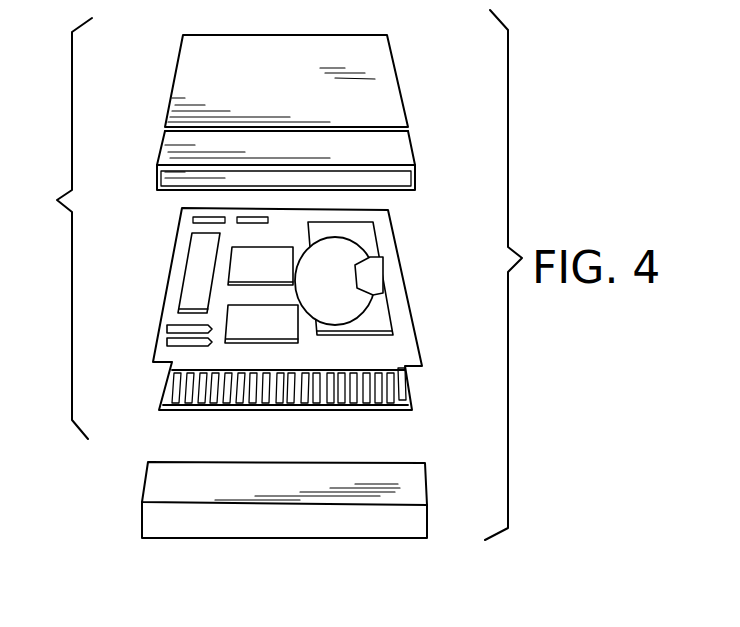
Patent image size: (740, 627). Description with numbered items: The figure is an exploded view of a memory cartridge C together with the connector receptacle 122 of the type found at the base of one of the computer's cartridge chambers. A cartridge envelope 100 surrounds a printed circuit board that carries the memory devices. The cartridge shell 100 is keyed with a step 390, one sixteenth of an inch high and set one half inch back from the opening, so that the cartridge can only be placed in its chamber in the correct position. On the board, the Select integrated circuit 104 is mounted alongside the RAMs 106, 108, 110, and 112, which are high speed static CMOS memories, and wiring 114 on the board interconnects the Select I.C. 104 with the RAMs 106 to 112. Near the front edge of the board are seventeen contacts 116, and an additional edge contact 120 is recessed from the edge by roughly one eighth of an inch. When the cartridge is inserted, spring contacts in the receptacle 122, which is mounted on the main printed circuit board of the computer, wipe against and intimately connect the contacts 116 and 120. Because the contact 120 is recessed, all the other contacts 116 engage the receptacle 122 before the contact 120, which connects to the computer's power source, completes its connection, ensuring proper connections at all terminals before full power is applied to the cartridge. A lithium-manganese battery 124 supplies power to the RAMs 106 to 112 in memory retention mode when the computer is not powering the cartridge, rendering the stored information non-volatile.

The cartridge C is at (270, 275).
The cartridge envelope 100 is at (387, 86).
The step 390 is at (318, 87).
The Select integrated circuit 104 is at (193, 272).
The RAM 106 is at (403, 353).
The RAM 108 is at (172, 360).
The RAM 110 is at (382, 317).
The RAM 112 is at (368, 238).
The wiring 114 is at (233, 339).
The contacts 116 is at (172, 376).
The edge contact 120 is at (399, 395).
The connector receptacle 122 is at (413, 488).
The lithium-manganese battery 124 is at (387, 295).